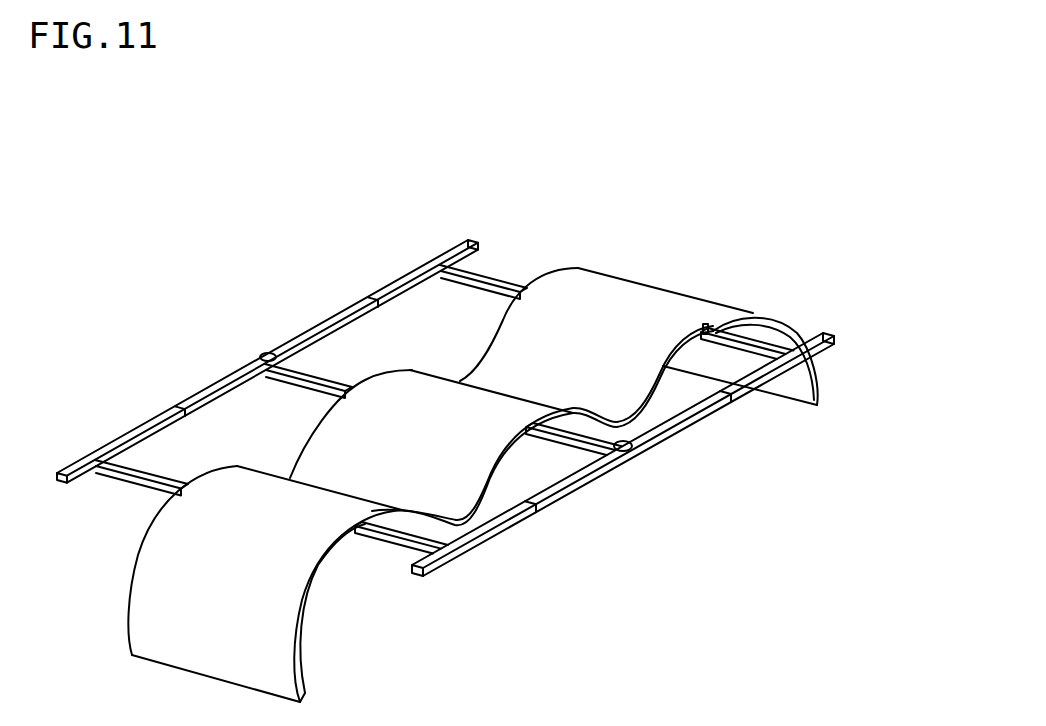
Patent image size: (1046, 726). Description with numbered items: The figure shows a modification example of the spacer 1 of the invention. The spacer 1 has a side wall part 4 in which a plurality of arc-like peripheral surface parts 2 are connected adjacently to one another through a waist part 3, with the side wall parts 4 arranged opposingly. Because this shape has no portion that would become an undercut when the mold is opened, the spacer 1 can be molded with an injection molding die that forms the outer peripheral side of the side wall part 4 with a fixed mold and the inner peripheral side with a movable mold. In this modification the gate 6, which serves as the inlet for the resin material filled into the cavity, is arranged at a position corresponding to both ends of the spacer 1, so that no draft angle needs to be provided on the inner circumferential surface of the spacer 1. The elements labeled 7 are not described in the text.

The spacer 1 is at (641, 167).
The arc-like peripheral surface part 2 is at (408, 388).
The waist part 3 is at (320, 478).
The side wall part 4 is at (240, 274).
The gate 6 is at (708, 327).
The support rail 7 is at (375, 298).